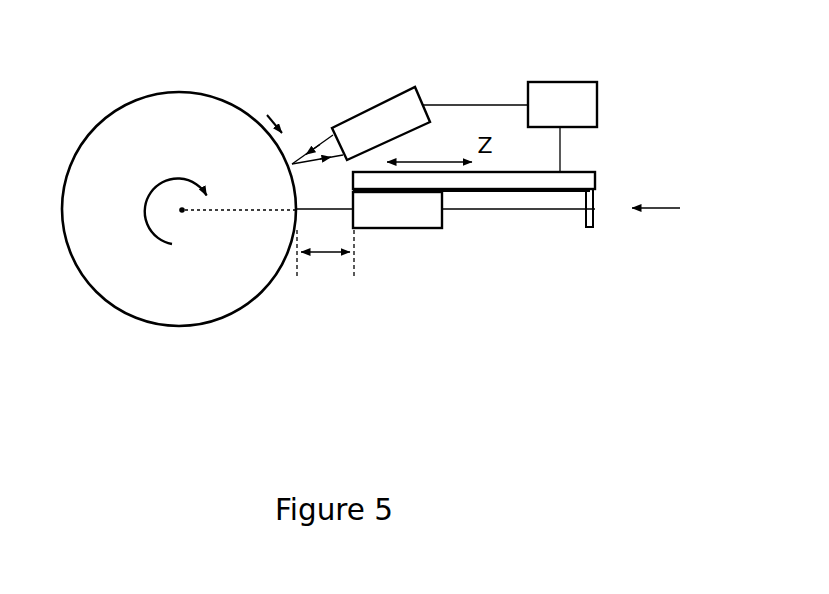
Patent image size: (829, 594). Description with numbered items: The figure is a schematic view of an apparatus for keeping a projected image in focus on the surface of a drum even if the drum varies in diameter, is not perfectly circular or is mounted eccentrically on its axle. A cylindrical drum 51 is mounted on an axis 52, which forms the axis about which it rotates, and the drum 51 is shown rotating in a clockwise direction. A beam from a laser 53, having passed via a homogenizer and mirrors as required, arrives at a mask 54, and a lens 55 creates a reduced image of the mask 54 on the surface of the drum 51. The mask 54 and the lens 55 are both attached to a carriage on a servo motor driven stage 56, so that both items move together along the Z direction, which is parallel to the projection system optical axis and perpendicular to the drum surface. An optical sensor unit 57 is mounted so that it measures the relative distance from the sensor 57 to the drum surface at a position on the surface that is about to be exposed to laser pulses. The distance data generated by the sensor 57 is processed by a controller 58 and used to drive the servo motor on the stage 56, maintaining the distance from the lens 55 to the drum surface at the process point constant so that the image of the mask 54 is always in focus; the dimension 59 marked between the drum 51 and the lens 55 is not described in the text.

The cylindrical drum 51 is at (165, 88).
The axis 52 is at (183, 226).
The laser 53 is at (657, 222).
The mask 54 is at (589, 242).
The lens 55 is at (397, 238).
The servo motor driven stage 56 is at (599, 179).
The optical sensor unit 57 is at (364, 102).
The controller 58 is at (604, 84).
The gap distance 59 is at (325, 264).